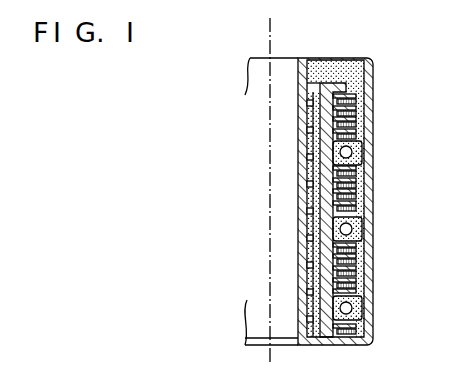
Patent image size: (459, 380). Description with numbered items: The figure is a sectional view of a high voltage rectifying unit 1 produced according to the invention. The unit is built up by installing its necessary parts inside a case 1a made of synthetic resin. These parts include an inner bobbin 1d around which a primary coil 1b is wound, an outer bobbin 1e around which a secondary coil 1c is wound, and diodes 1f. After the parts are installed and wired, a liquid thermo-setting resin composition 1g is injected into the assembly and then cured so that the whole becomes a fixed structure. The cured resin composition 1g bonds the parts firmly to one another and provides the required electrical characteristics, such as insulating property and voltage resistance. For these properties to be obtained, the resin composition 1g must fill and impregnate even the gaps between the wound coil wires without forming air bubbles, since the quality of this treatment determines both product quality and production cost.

The high voltage rectifying unit 1 is at (314, 183).
The case 1a is at (371, 308).
The primary coil 1b is at (300, 181).
The secondary coil 1c is at (358, 207).
The inner bobbin 1d is at (300, 150).
The outer bobbin 1e is at (363, 93).
The diodes 1f is at (359, 152).
The liquid thermo-setting resin composition 1g is at (341, 72).